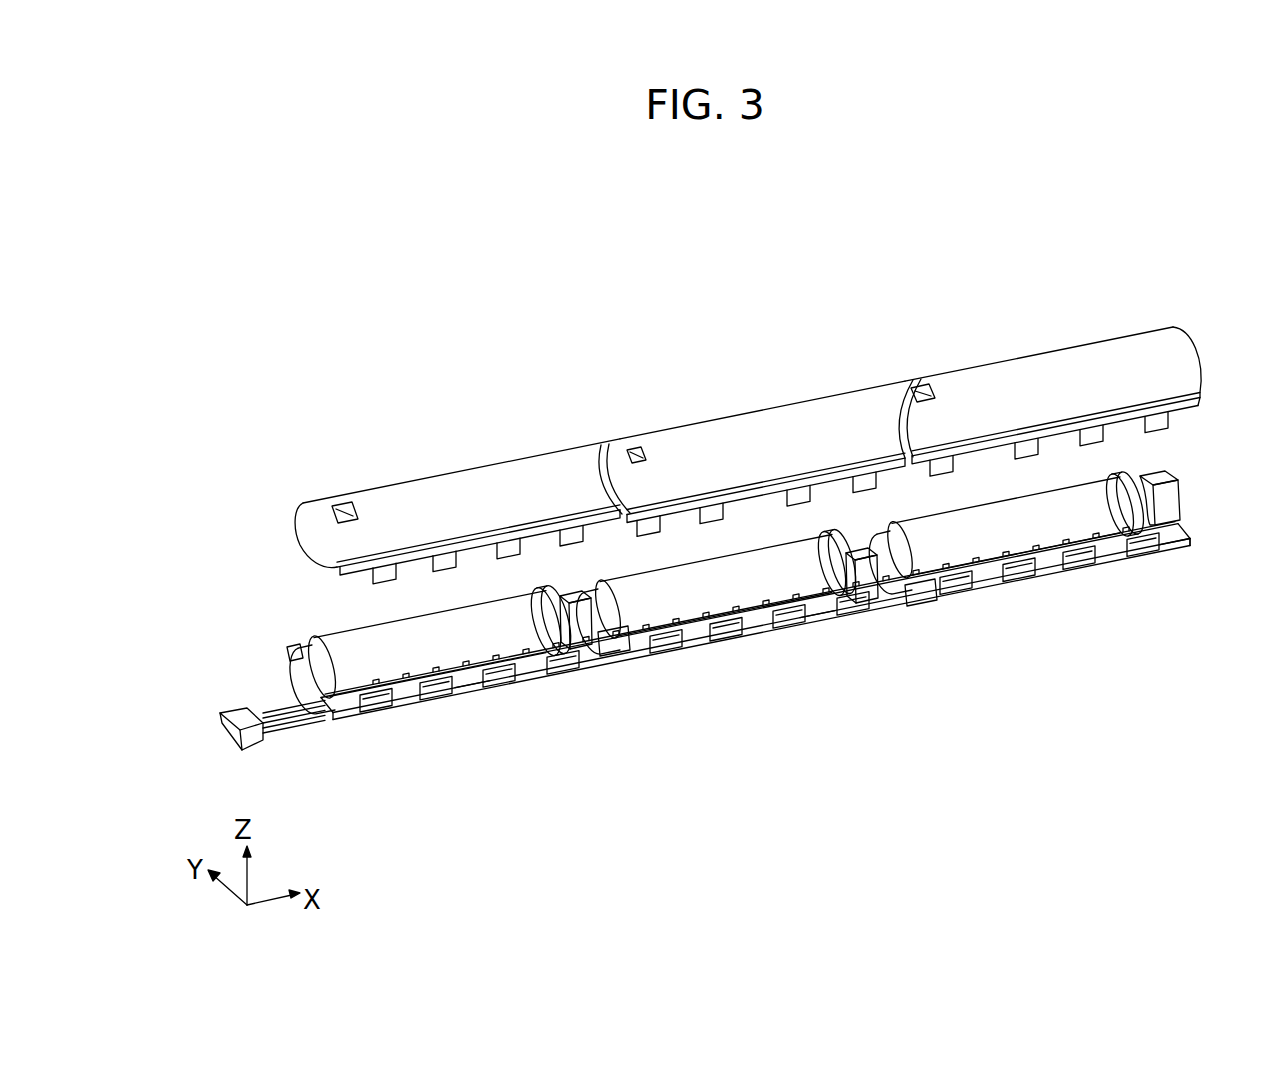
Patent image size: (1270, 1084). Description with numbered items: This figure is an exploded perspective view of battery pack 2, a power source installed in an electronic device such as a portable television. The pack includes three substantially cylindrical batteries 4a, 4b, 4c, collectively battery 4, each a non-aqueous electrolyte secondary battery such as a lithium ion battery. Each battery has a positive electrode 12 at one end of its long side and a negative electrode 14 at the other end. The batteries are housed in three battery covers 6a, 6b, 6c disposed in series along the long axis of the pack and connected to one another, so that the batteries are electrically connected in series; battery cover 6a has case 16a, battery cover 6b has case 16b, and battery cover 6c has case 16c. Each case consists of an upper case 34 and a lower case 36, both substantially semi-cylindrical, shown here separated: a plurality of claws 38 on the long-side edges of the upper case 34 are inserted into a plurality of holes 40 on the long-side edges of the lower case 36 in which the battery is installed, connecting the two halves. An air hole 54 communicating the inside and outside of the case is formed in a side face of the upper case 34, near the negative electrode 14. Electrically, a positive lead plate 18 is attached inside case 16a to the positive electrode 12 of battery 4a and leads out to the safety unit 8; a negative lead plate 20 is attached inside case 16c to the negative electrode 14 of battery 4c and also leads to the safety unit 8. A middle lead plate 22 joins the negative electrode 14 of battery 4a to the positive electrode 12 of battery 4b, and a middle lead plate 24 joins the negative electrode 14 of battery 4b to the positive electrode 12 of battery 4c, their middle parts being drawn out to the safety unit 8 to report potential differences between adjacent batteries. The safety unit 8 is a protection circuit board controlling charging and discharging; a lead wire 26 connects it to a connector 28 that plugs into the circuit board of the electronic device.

The battery pack 2 is at (906, 248).
The battery 4 is at (711, 652).
The battery 4a is at (995, 545).
The battery 4b is at (684, 600).
The battery 4c is at (353, 672).
The battery cover 6a is at (993, 362).
The battery cover 6b is at (686, 425).
The battery cover 6c is at (403, 482).
The safety unit 8 is at (750, 638).
The positive electrode 12 is at (547, 593).
The negative electrode 14 is at (320, 662).
The case 16a is at (1130, 335).
The case 16b is at (820, 397).
The case 16c is at (530, 457).
The positive lead plate 18 is at (930, 588).
The negative lead plate 20 is at (312, 645).
The middle lead plate 22 is at (868, 527).
The middle lead plate 24 is at (616, 643).
The lead wire 26 is at (297, 735).
The connector 28 is at (235, 738).
The upper case 34 is at (460, 487).
The lower case 36 is at (471, 678).
The claw 38 is at (510, 553).
The hole 40 is at (433, 695).
The air hole 54 is at (345, 510).